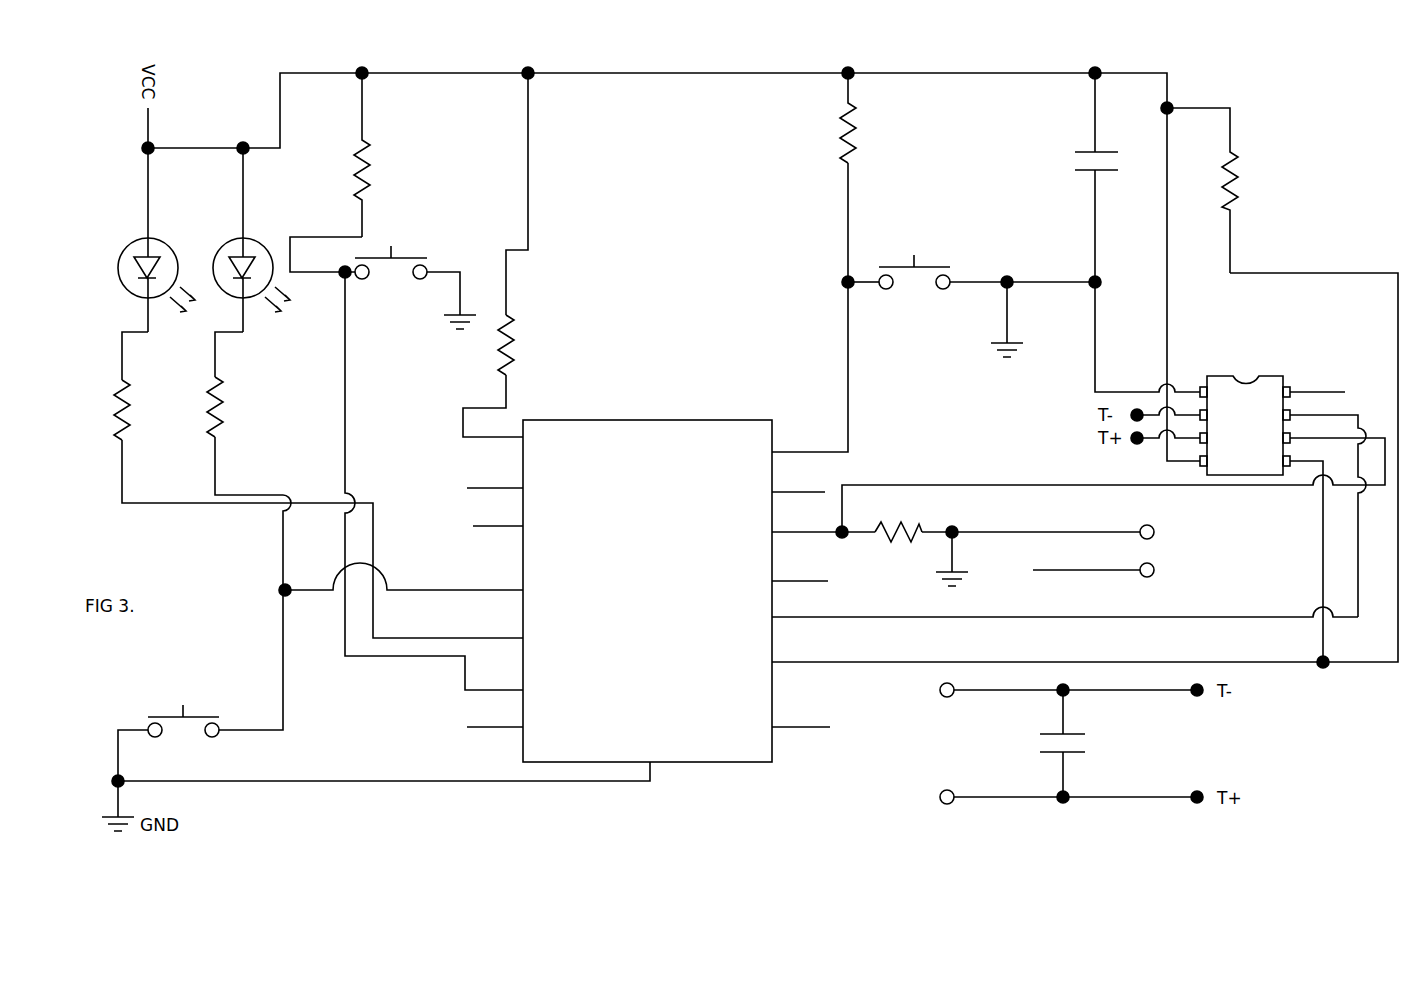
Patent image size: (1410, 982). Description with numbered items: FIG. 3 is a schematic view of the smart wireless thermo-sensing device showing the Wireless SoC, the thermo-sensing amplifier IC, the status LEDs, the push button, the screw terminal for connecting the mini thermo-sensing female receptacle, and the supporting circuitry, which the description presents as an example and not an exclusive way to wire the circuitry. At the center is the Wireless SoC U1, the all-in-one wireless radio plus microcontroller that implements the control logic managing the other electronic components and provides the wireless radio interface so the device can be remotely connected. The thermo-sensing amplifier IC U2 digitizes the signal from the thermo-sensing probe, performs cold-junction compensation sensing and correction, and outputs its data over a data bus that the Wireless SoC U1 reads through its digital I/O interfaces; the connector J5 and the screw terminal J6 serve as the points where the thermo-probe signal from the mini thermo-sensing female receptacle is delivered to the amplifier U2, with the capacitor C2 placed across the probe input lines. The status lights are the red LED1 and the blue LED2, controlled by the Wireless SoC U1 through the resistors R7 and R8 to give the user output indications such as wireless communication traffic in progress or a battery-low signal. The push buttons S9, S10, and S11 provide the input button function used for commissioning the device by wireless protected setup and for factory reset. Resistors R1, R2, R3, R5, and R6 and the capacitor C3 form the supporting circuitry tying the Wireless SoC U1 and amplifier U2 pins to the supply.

The red LED LED1 is at (251, 240).
The blue LED LED2 is at (156, 240).
The 10k ohm resistor R1 is at (536, 343).
The 10k ohm resistor R2 is at (391, 155).
The 10k ohm resistor R3 is at (899, 557).
The 10k ohm resistor R5 is at (1230, 190).
The 10k ohm resistor R6 is at (873, 134).
The 330 ohm resistor R7 is at (242, 408).
The 330 ohm resistor R8 is at (148, 410).
The 0.01uF capacitor C2 is at (1031, 743).
The 0.01uF capacitor C3 is at (1065, 136).
The push button switch S9 is at (914, 260).
The push button switch S10 is at (391, 252).
The push button switch S11 is at (183, 709).
The ESP8266 ESP-12 Wi-Fi module U1 is at (648, 577).
The MAX31855 thermocouple amplifier U2 is at (1241, 411).
The connector J5 is at (1159, 551).
The thermocouple connector J6 is at (938, 743).